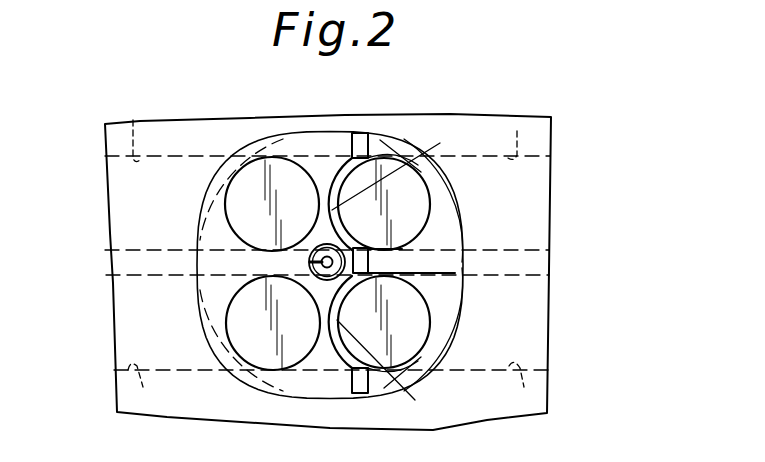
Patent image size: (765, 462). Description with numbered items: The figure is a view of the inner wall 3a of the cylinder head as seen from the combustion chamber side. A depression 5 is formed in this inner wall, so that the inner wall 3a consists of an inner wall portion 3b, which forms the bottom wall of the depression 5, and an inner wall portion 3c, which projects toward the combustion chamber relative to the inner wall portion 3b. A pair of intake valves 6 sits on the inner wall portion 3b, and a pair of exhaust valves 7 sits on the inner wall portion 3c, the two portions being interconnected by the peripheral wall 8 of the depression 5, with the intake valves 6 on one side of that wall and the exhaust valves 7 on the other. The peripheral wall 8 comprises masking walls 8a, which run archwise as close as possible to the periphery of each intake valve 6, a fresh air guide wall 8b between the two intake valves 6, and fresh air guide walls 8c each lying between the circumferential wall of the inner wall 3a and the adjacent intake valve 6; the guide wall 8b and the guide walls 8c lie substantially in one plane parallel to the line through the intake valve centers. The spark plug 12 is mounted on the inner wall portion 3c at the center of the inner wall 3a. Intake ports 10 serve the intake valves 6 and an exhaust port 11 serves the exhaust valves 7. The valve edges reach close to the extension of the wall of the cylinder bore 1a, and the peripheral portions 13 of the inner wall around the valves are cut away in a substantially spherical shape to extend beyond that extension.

The cylinder bore 1a is at (212, 315).
The inner wall of the cylinder head 3a is at (329, 160).
The inner wall portion 3b is at (440, 243).
The inner wall portion 3c is at (205, 258).
The depression 5 is at (388, 258).
The intake valves 6 is at (413, 198).
The exhaust valves 7 is at (237, 190).
The peripheral wall 8 is at (373, 273).
The masking walls 8a is at (398, 272).
The fresh air guide wall 8b is at (414, 230).
The fresh air guide walls 8c is at (361, 144).
The intake ports 10 is at (528, 266).
The exhaust port 11 is at (144, 255).
The spark plug 12 is at (327, 281).
The peripheral cut away portions 13 is at (247, 150).